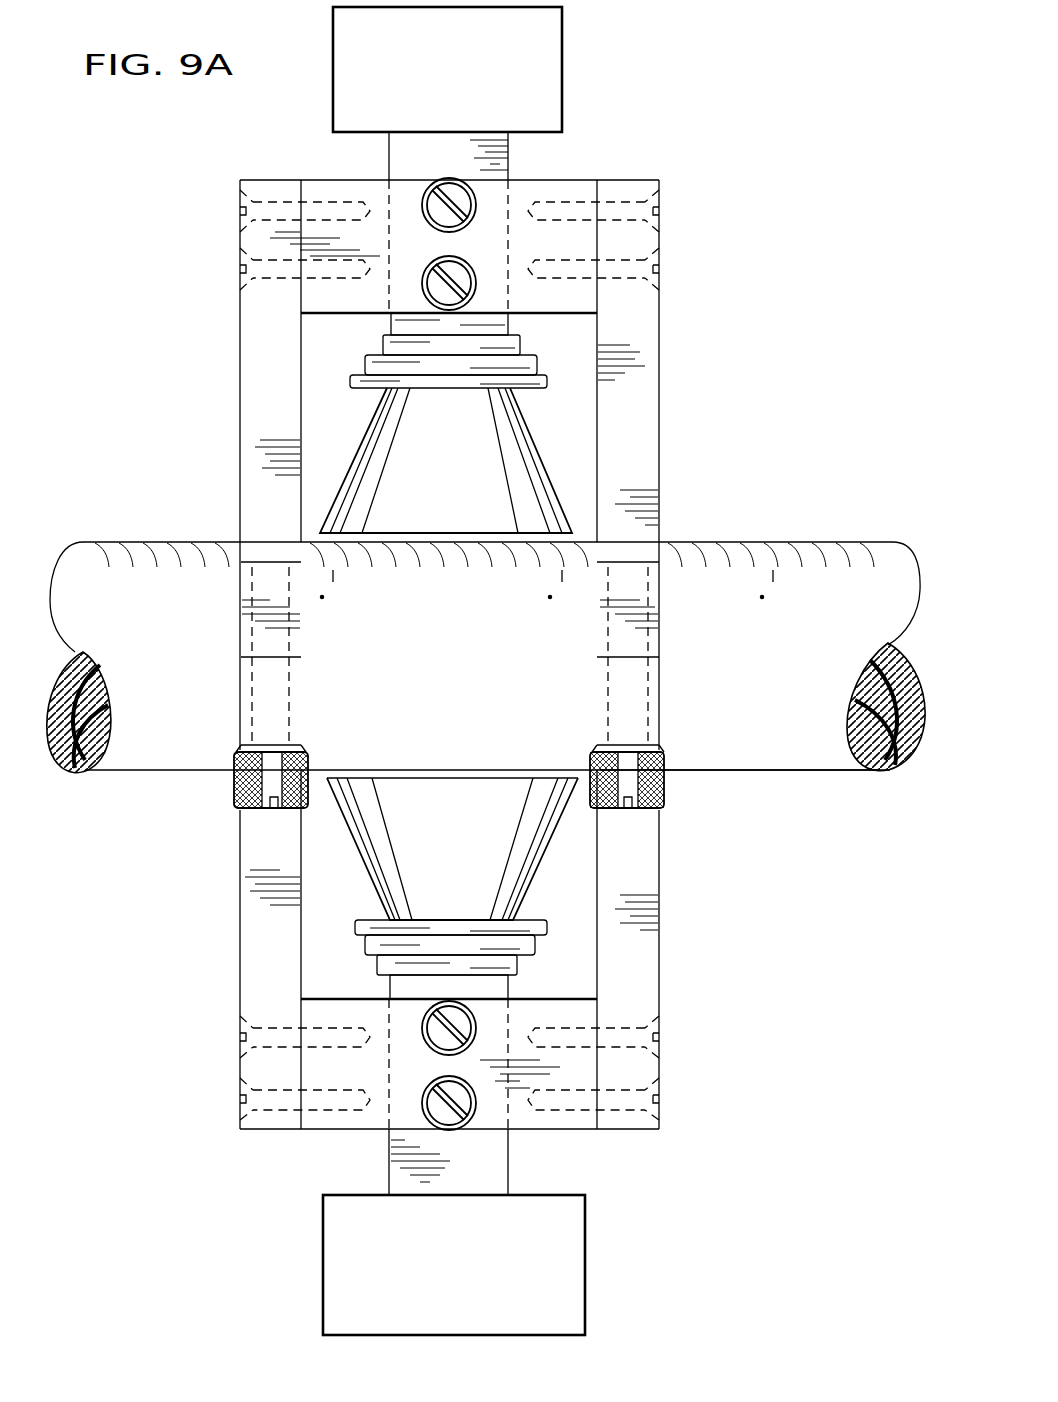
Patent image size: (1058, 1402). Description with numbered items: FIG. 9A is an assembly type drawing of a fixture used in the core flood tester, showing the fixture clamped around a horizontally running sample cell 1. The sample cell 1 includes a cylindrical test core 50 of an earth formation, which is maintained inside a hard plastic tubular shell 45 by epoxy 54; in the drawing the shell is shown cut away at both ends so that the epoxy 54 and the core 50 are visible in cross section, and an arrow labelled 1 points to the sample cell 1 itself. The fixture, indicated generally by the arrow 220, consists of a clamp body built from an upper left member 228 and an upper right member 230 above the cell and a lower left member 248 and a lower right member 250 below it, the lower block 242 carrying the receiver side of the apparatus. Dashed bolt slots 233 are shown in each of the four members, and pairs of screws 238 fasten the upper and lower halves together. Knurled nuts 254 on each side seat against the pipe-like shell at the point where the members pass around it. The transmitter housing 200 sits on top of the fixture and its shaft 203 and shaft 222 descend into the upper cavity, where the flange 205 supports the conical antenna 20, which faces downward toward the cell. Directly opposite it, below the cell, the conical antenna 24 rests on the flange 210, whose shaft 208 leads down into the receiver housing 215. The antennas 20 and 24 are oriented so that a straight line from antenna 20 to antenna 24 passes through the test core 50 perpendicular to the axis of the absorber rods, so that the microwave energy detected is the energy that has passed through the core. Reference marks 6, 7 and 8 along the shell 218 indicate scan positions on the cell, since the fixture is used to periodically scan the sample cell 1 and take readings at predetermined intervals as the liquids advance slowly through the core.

The sample cell 1 is at (771, 776).
The point 6 on pipe 6 is at (332, 590).
The point 7 on pipe 7 is at (560, 590).
The point 8 on pipe 8 is at (772, 590).
The antenna 20 is at (458, 481).
The antenna 24 is at (458, 838).
The tubular shell 45 is at (827, 750).
The test core 50 is at (875, 678).
The epoxy 54 is at (883, 752).
The transmitter housing 200 is at (460, 111).
The transmitter shaft 203 is at (518, 152).
The transmitter transducer flange 205 is at (378, 362).
The receiver shaft 208 is at (503, 1157).
The receiver transducer flange 210 is at (400, 962).
The receiver housing 215 is at (460, 1315).
The pipe 218 is at (727, 540).
The clamp assembly 220 is at (728, 440).
The transmitter shaft 222 is at (372, 192).
The upper left clamp member 228 is at (250, 422).
The upper right clamp member 230 is at (640, 368).
The bolt slots 233 is at (660, 1066).
The screws 238 is at (462, 273).
The lower clamp block 242 is at (355, 1125).
The lower left clamp member 248 is at (255, 932).
The lower right clamp member 250 is at (643, 940).
The knurled nuts 254 is at (668, 808).